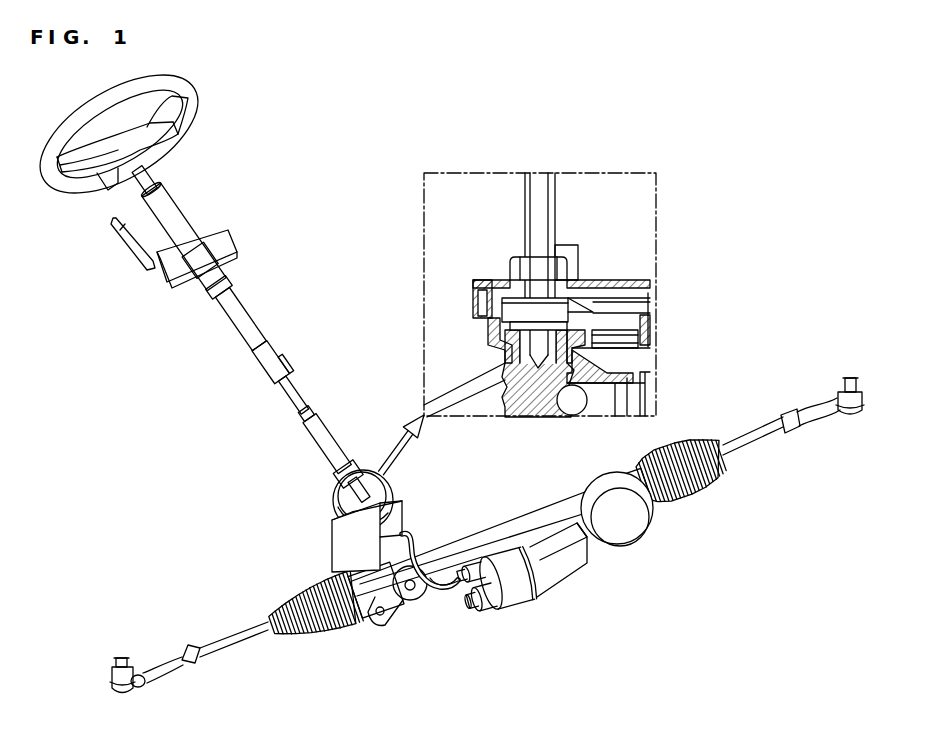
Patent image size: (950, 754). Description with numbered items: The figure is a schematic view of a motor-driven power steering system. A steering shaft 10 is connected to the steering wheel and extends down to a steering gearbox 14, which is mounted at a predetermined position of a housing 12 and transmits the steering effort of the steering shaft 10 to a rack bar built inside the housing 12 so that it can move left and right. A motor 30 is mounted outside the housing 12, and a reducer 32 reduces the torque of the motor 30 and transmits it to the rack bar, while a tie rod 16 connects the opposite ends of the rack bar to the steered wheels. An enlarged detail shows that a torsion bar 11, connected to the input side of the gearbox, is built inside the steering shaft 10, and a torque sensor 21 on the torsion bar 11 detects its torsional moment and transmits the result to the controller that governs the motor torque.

The steering shaft 10 is at (173, 224).
The torsion bar 11 is at (538, 230).
The housing 12 is at (530, 518).
The steering gearbox 14 is at (347, 548).
The tie rod 16 is at (170, 660).
The torque sensor 21 is at (556, 305).
The motor 30 is at (563, 582).
The reducer 32 is at (627, 527).